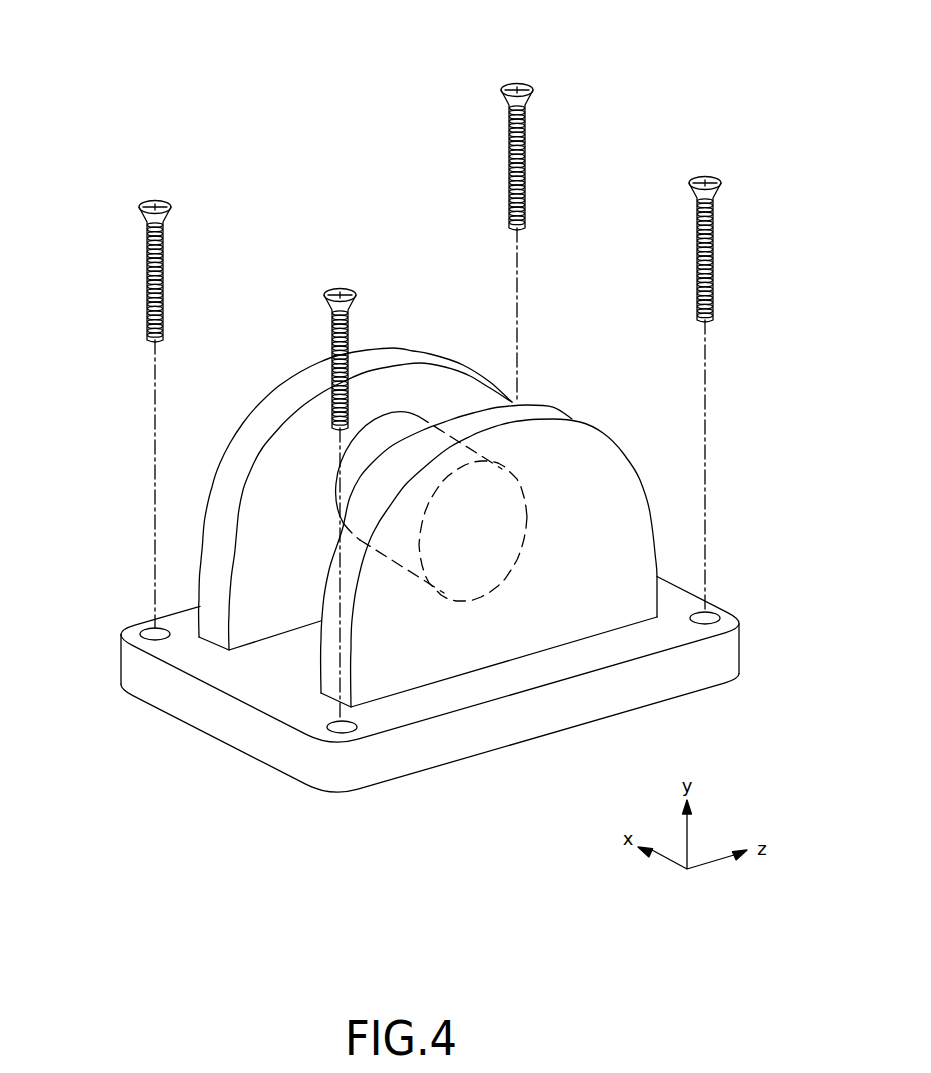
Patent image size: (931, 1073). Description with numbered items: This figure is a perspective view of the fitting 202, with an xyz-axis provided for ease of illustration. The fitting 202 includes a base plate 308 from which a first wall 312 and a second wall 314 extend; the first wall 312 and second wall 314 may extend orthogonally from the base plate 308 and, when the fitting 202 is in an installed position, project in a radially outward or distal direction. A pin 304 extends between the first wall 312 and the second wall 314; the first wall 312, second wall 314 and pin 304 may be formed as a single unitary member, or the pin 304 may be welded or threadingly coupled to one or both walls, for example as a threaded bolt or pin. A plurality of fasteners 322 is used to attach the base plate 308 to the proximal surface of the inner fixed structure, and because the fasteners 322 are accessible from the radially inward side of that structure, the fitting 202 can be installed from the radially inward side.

The fitting 202 is at (430, 436).
The base plate 308 is at (283, 747).
The first wall 312 is at (558, 432).
The second wall 314 is at (258, 430).
The pin 304 is at (390, 442).
The plurality of fasteners 322 is at (157, 185).